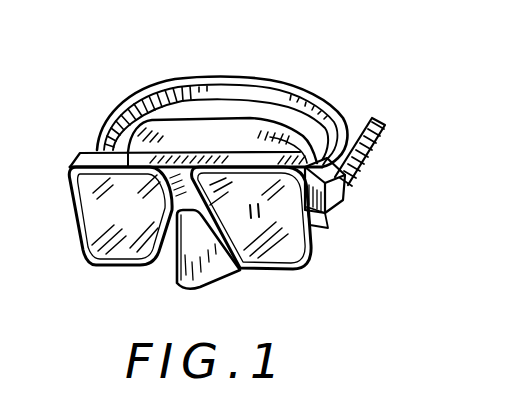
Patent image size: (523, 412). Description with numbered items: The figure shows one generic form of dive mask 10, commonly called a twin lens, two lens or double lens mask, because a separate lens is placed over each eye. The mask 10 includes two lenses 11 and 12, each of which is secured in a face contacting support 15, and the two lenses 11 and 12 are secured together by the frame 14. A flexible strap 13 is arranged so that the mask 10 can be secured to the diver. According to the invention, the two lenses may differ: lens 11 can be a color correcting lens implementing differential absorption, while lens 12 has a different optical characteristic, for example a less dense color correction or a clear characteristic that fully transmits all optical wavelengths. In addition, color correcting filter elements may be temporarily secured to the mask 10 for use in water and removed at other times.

The mask 10 is at (175, 214).
The lens 11 is at (252, 218).
The lens 12 is at (120, 216).
The flexible strap 13 is at (342, 102).
The frame 14 is at (77, 162).
The face contacting support 15 is at (248, 122).